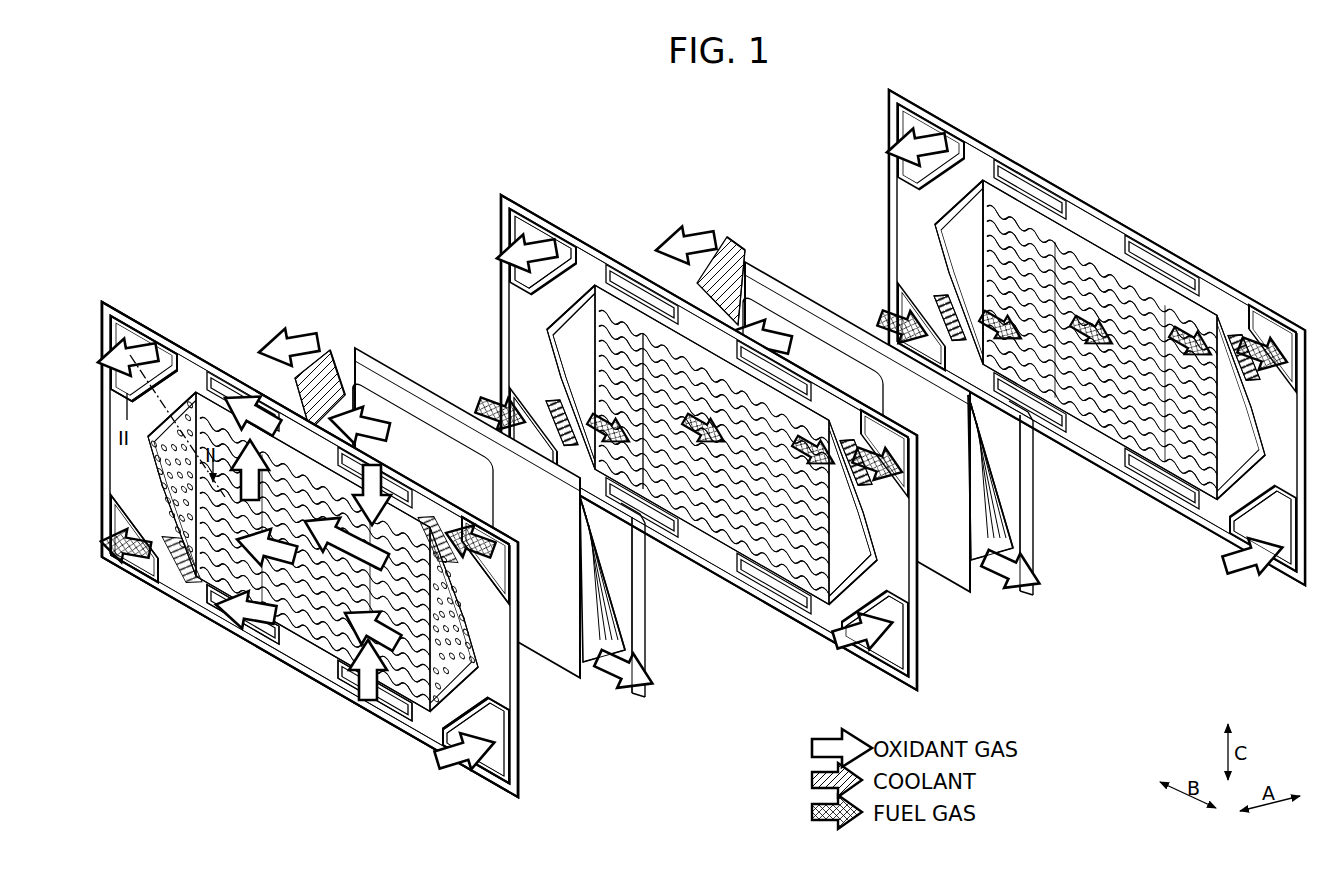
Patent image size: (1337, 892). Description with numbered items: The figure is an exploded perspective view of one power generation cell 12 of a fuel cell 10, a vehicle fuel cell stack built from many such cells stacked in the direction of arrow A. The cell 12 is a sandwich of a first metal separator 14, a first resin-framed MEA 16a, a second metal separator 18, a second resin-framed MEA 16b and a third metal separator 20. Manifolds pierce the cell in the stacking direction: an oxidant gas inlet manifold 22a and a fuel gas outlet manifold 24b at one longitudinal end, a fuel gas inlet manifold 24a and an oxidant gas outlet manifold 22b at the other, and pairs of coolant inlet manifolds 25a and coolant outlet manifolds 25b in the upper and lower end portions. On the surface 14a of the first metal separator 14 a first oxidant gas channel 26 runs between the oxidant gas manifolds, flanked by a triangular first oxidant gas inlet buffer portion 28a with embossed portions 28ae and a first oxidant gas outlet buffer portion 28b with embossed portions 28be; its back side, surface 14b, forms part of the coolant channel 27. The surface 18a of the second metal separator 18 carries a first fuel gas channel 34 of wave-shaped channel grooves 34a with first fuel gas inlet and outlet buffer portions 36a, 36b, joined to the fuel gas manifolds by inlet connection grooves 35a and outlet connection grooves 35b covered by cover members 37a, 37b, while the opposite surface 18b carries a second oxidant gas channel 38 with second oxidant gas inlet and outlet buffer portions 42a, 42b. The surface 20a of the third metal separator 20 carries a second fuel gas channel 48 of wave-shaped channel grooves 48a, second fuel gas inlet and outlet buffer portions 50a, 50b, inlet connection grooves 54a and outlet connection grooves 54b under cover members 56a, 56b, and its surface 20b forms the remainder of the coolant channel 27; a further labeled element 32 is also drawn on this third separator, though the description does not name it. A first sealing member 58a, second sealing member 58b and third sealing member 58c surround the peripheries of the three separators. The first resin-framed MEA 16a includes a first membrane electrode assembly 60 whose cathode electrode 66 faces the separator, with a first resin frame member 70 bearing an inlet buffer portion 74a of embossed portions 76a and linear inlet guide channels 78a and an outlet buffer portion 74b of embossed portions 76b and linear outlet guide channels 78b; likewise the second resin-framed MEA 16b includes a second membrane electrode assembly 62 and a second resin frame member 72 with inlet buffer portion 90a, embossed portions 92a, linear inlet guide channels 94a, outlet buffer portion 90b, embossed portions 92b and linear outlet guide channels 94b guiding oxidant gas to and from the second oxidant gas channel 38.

The fuel cell 10 is at (303, 166).
The power generation cell 12 is at (310, 549).
The first metal separator 14 is at (107, 298).
The surface of the first metal separator 14a is at (520, 750).
The surface of the first metal separator 14b is at (522, 765).
The first resin-framed MEA 16a is at (320, 347).
The second resin-framed MEA 16b is at (725, 232).
The second metal separator 18 is at (498, 197).
The surface of the second metal separator 18a is at (930, 645).
The surface of the second metal separator 18b is at (925, 623).
The third metal separator 20 is at (886, 92).
The surface of the third metal separator 20a is at (1000, 238).
The surface of the third metal separator 20b is at (897, 185).
The oxidant gas inlet manifold 22a is at (483, 765).
The oxidant gas outlet manifold 22b is at (905, 140).
The fuel gas inlet manifold 24a is at (142, 578).
The fuel gas outlet manifold 24b is at (1280, 293).
The coolant inlet manifold 25a is at (353, 593).
The coolant outlet manifold 25b is at (265, 600).
The first oxidant gas channel 26 is at (318, 605).
The coolant channel 27 is at (308, 603).
The first oxidant gas inlet buffer portion 28a is at (480, 640).
The first oxidant gas outlet buffer portion 28b is at (202, 425).
The embossed portion 28ae is at (423, 627).
The embossed portion 28be is at (195, 598).
The fuel gas flow field 32 is at (1128, 400).
The first fuel gas channel 34 is at (692, 470).
The wave-shaped channel groove 34a is at (680, 540).
The inlet connection groove 35a is at (547, 460).
The outlet connection groove 35b is at (868, 425).
The first fuel gas inlet buffer portion 36a is at (535, 383).
The first fuel gas outlet buffer portion 36b is at (808, 590).
The cover member 37a is at (598, 490).
The cover member 37b is at (852, 400).
The second oxidant gas channel 38 is at (716, 498).
The second oxidant gas inlet buffer portion 42a is at (892, 545).
The second oxidant gas outlet buffer portion 42b is at (505, 352).
The second fuel gas channel 48 is at (1093, 380).
The wave-shaped channel groove 48a is at (1090, 440).
The second fuel gas inlet buffer portion 50a is at (968, 222).
The second fuel gas outlet buffer portion 50b is at (1198, 470).
The inlet connection groove 54a is at (925, 297).
The outlet connection groove 54b is at (1258, 320).
The cover member 56a is at (965, 262).
The cover member 56b is at (1250, 320).
The first sealing member 58a is at (425, 752).
The second sealing member 58b is at (870, 672).
The third sealing member 58c is at (1258, 572).
The first membrane electrode assembly 60 is at (410, 418).
The second membrane electrode assembly 62 is at (800, 330).
The cathode electrode 66 is at (775, 300).
The first resin frame member 70 is at (640, 652).
The second resin frame member 72 is at (1035, 550).
The inlet buffer portion 74a is at (603, 683).
The outlet buffer portion 74b is at (338, 345).
The embossed portion 76a is at (613, 688).
The embossed portion 76b is at (300, 385).
The linear inlet guide channel 78a is at (597, 665).
The linear outlet guide channel 78b is at (330, 372).
The inlet buffer portion 90a is at (985, 612).
The outlet buffer portion 90b is at (742, 243).
The embossed portion 92a is at (1028, 572).
The embossed portion 92b is at (698, 278).
The linear inlet guide channel 94a is at (1010, 520).
The linear outlet guide channel 94b is at (737, 268).